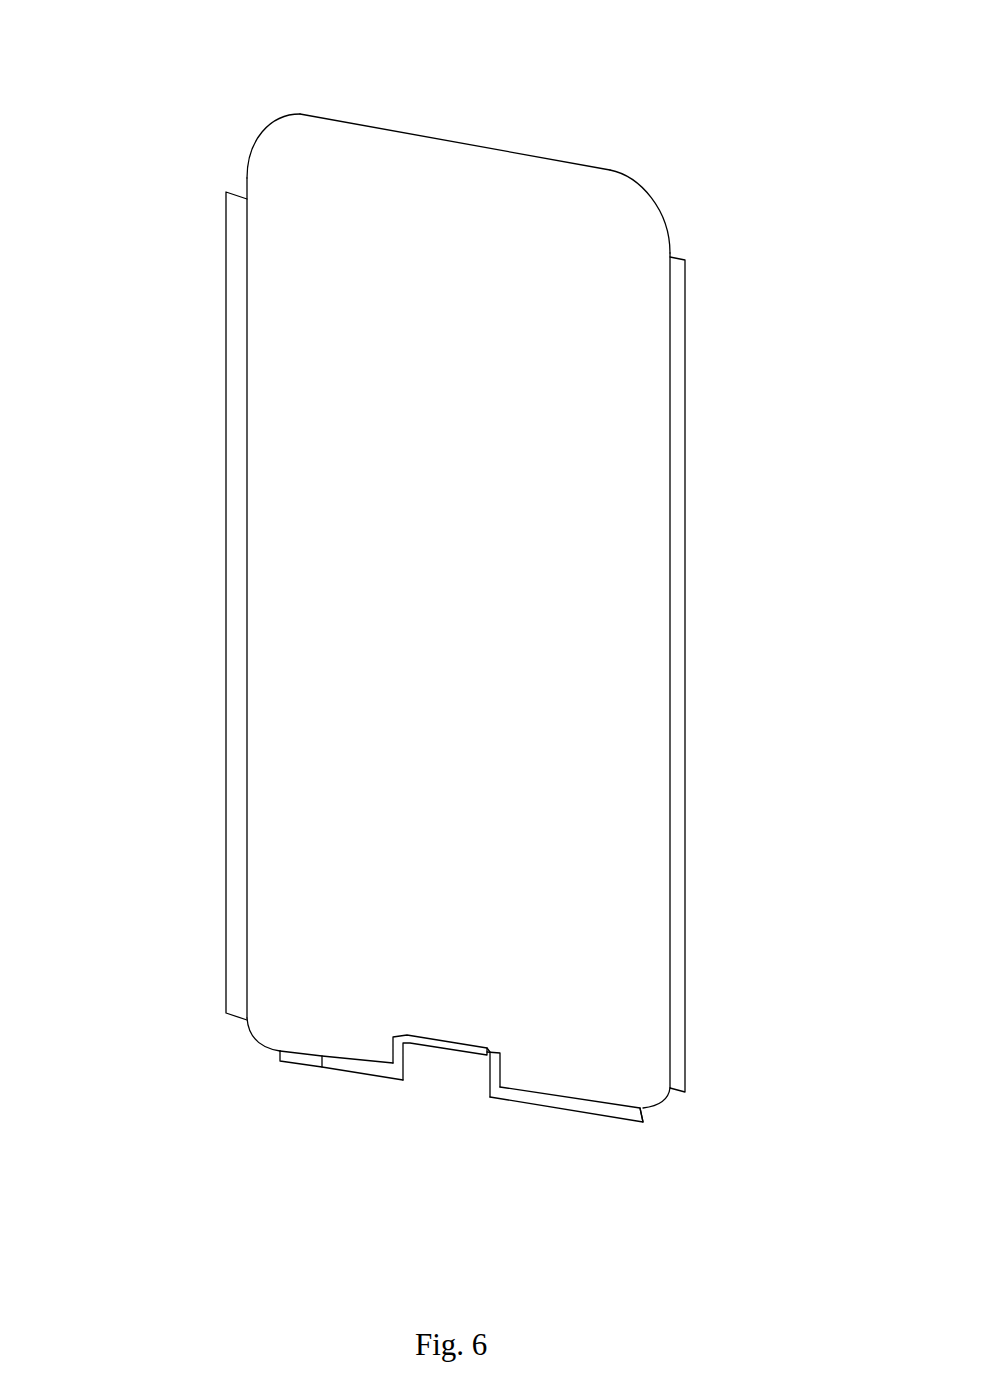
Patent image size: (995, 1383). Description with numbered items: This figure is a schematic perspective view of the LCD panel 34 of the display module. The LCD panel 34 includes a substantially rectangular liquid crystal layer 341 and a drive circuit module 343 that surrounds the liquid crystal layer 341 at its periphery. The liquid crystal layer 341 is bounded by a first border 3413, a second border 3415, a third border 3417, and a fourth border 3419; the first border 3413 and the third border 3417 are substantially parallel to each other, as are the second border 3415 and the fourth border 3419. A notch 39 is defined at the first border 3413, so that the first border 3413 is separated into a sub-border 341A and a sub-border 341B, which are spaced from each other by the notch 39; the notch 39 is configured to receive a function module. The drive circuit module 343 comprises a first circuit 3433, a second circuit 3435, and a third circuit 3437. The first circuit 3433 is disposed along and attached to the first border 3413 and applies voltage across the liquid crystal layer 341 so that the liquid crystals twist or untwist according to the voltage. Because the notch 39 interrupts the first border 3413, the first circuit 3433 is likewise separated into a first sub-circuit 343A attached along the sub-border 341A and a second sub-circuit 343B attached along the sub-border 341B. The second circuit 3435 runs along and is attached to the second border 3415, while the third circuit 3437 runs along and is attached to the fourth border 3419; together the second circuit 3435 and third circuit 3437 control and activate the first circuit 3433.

The LCD panel 34 is at (190, 45).
The liquid crystal layer 341 is at (648, 883).
The third border 3417 is at (522, 150).
The fourth border 3419 is at (247, 420).
The second border 3415 is at (670, 713).
The first border 3413 is at (565, 1092).
The drive circuit module 343 is at (700, 945).
The third circuit 3437 is at (233, 740).
The second circuit 3435 is at (677, 608).
The first circuit 3433 is at (262, 1055).
The first sub-circuit 343A is at (370, 1078).
The second sub-circuit 343B is at (530, 1097).
The notch 39 is at (445, 1101).
The sub-border 341A is at (321, 1077).
The sub-border 341B is at (585, 1122).